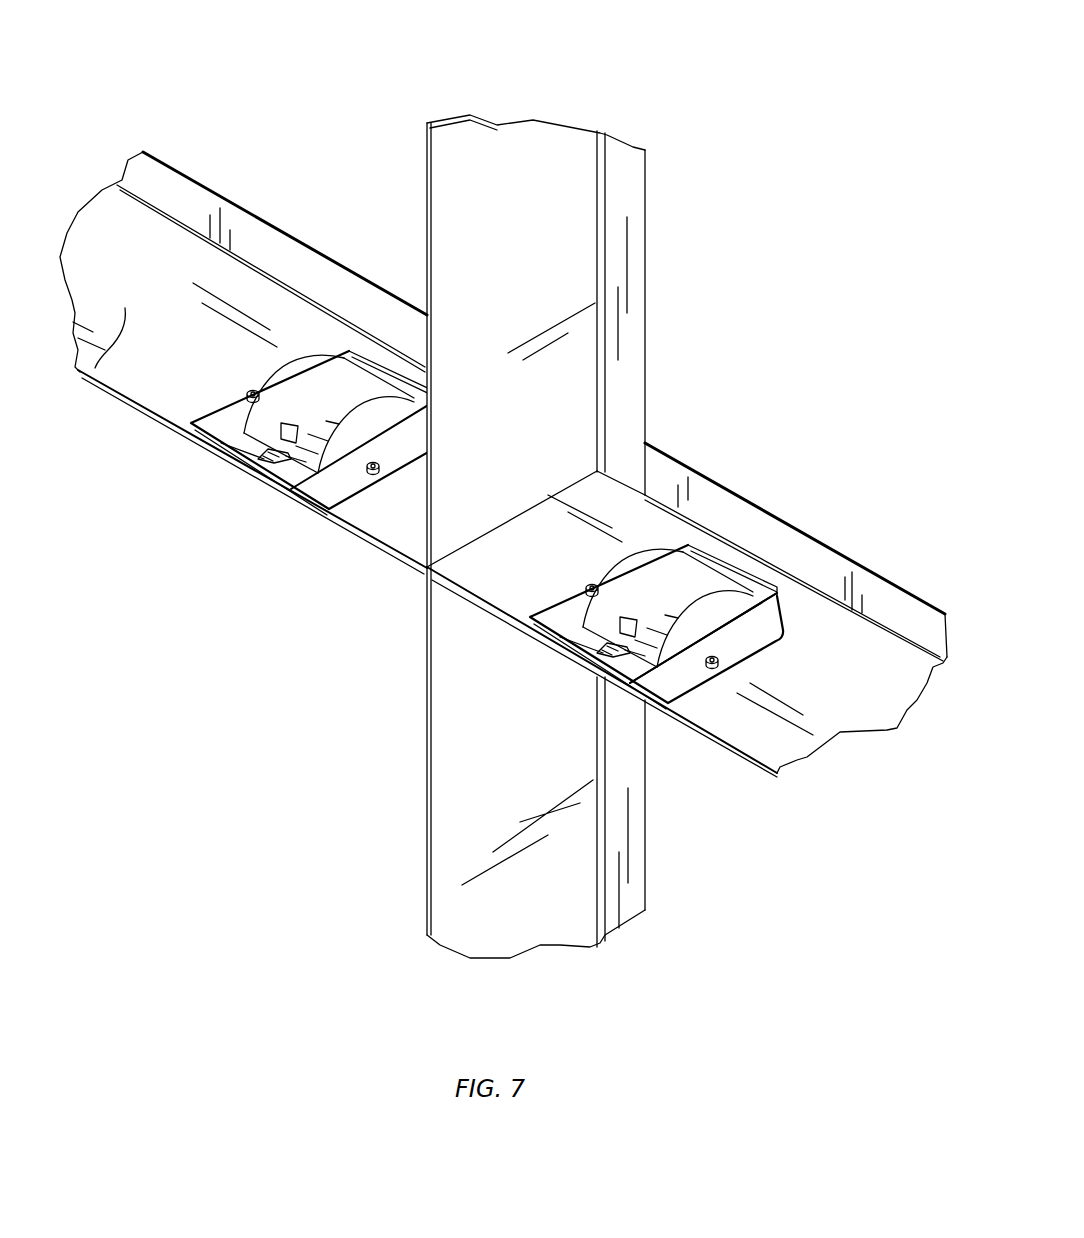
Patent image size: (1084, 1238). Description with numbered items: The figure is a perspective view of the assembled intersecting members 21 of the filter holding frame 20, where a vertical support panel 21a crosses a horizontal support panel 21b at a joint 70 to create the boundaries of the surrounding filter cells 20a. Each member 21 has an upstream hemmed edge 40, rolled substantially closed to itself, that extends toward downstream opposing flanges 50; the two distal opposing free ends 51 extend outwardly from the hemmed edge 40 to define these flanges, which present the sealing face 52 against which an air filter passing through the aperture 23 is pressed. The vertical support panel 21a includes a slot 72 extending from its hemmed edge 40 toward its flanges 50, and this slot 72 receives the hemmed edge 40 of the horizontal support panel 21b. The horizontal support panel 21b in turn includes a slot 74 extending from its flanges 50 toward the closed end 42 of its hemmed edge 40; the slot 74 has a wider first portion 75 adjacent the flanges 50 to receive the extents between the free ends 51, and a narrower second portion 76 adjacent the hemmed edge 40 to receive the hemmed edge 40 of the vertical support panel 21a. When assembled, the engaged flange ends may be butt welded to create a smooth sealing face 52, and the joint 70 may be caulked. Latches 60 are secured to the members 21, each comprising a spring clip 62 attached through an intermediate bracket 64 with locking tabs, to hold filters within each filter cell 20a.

The filter holding frame 20 is at (843, 165).
The filter cell 20a is at (307, 122).
The intersecting member 21 is at (183, 148).
The vertical support panel 21a is at (507, 145).
The horizontal support panel 21b is at (78, 362).
The aperture 23 is at (230, 197).
The upstream hemmed edge 40 is at (455, 200).
The closed end 42 is at (473, 600).
The downstream opposing flanges 50 is at (635, 340).
The distal opposing free ends 51 is at (648, 218).
The sealing face 52 is at (277, 257).
The latch 60 is at (215, 392).
The spring clip 62 is at (312, 378).
The intermediate bracket 64 is at (213, 418).
The joint 70 is at (395, 592).
The slot 72 is at (557, 494).
The slot 74 is at (578, 527).
The first portion 75 is at (627, 492).
The second portion 76 is at (523, 514).